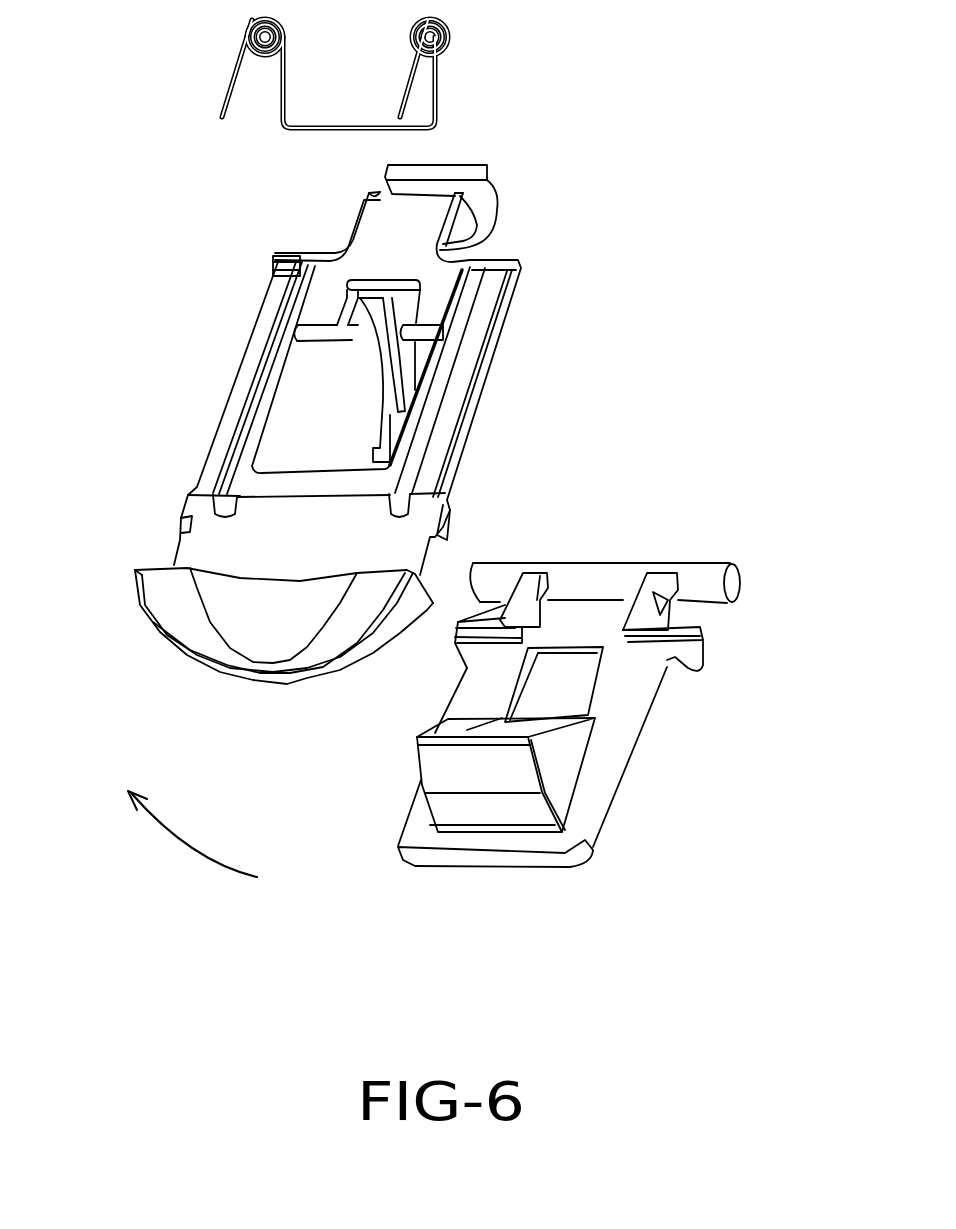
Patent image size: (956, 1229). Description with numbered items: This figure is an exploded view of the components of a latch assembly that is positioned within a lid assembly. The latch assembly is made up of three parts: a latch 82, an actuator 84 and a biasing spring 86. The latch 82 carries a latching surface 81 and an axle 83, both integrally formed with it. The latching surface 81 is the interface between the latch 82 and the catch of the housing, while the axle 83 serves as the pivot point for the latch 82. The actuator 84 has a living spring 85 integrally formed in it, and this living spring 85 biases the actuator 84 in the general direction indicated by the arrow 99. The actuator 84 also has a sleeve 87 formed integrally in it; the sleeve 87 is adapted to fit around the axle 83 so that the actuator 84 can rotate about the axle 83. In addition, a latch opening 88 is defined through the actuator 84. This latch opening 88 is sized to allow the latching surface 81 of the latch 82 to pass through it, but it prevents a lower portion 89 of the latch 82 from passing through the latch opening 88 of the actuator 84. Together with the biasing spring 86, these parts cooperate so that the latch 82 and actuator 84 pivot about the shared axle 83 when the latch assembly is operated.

The latching surface 81 is at (435, 735).
The latch 82 is at (620, 779).
The axle 83 is at (700, 577).
The actuator 84 is at (175, 612).
The living spring 85 is at (380, 372).
The biasing spring 86 is at (435, 97).
The sleeve 87 is at (493, 181).
The latch opening 88 is at (257, 423).
The lower portion 89 is at (557, 845).
The arrow 99 is at (190, 850).